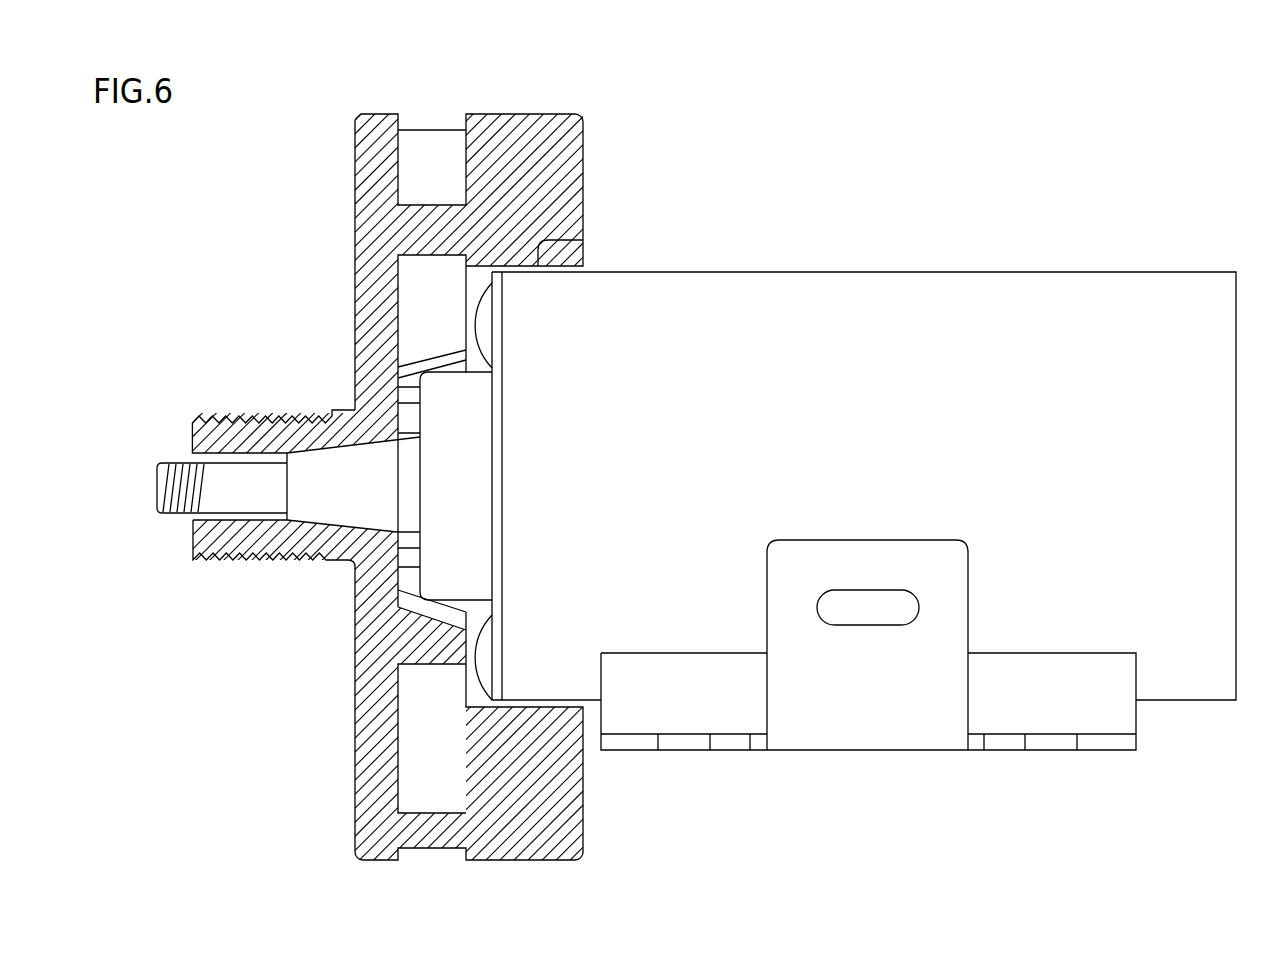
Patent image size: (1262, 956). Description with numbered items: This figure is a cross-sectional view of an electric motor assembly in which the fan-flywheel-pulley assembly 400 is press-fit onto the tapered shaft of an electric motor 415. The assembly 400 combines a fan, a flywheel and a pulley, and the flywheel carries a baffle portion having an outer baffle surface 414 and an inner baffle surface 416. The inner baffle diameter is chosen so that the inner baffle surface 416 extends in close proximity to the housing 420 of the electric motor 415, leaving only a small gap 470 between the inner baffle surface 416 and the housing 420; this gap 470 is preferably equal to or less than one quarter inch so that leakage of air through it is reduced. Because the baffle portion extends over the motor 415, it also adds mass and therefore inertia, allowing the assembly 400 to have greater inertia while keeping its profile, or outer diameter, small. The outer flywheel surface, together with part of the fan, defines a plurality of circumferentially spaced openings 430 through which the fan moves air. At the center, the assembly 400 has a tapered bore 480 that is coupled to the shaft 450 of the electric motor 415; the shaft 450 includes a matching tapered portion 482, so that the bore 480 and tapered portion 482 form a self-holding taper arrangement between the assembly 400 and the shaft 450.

The fan-flywheel-pulley assembly 400 is at (527, 54).
The outer baffle surface 414 is at (543, 114).
The electric motor 415 is at (948, 270).
The inner baffle surface 416 is at (546, 266).
The housing 420 is at (838, 271).
The openings 430 is at (430, 146).
The shaft 450 is at (312, 446).
The gap 470 is at (578, 268).
The tapered bore 480 is at (283, 526).
The tapered portion 482 is at (375, 482).